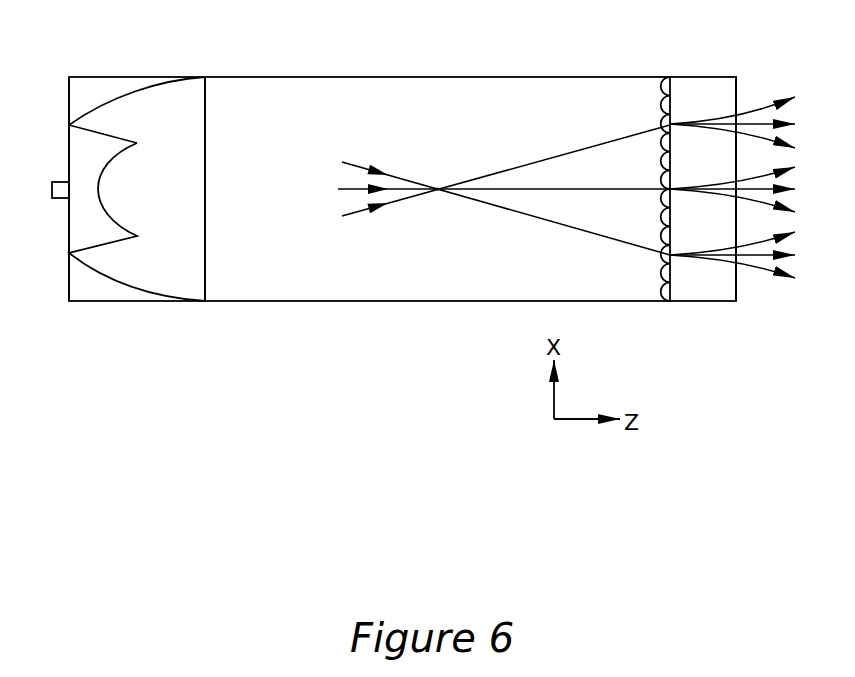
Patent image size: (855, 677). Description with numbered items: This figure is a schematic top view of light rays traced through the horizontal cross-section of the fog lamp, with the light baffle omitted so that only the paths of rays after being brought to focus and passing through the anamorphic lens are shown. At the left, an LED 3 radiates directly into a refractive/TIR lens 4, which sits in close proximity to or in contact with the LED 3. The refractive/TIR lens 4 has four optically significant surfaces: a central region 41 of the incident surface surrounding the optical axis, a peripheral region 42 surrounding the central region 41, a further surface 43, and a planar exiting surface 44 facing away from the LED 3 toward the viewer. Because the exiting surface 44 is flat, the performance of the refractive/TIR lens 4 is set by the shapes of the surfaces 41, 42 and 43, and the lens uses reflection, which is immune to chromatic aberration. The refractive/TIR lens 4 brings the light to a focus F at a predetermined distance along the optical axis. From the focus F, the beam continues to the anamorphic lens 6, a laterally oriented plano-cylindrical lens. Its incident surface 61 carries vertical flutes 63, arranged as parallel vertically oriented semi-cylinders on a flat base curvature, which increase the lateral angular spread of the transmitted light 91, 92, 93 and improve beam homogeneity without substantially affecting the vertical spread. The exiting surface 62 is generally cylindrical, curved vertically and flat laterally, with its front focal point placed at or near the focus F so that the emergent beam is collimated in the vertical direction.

The LED 3 is at (52, 189).
The refractive/TIR lens 4 is at (205, 67).
The central region 41 is at (110, 214).
The peripheral region 42 is at (88, 131).
The surface 43 is at (88, 107).
The exiting surface 44 is at (206, 118).
The anamorphic lens 6 is at (738, 58).
The incident surface 61 is at (661, 108).
The exiting surface 62 is at (737, 90).
The vertical flutes 63 is at (661, 274).
The transmitted light 91 is at (569, 152).
The transmitted light 92 is at (615, 189).
The transmitted light 93 is at (569, 226).
The focus F is at (438, 192).